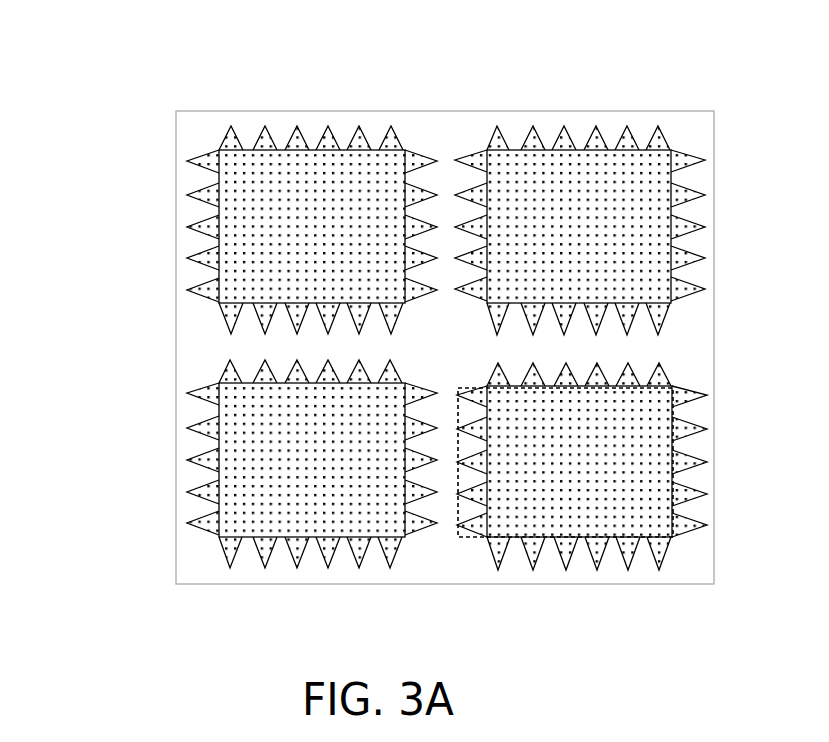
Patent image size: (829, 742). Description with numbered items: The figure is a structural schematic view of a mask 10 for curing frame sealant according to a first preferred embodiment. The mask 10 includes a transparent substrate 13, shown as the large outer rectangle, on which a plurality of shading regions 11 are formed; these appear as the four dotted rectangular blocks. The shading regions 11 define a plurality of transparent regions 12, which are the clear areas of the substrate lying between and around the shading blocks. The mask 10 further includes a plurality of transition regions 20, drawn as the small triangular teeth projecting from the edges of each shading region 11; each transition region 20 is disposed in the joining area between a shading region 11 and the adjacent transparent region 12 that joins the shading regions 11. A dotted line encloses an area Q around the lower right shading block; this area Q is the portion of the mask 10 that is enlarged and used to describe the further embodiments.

The mask 10 is at (128, 108).
The transparent substrate 13 is at (208, 102).
The shading region 11 is at (285, 153).
The transition region 20 is at (317, 116).
The transparent region 12 is at (445, 162).
The area Q is at (458, 551).